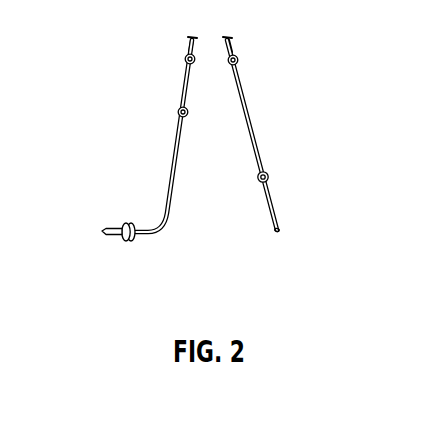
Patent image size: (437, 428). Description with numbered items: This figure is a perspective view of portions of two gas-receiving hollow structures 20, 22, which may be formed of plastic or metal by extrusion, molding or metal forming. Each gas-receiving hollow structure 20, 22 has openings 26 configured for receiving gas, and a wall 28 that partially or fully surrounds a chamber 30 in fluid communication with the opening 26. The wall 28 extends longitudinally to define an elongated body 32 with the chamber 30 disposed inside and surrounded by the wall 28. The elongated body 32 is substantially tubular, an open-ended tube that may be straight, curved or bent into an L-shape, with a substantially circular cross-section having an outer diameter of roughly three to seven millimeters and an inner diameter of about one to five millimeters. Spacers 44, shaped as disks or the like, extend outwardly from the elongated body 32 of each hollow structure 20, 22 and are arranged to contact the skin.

The gas-receiving hollow structure 20 is at (277, 205).
The gas-receiving hollow structure 22 is at (152, 240).
The opening 26 is at (86, 232).
The wall 28 is at (201, 167).
The chamber 30 is at (183, 92).
The elongated body 32 is at (208, 172).
The spacer 44 is at (186, 57).